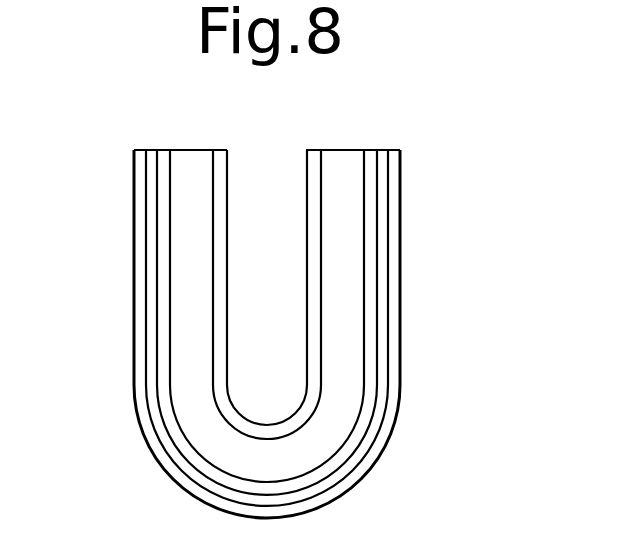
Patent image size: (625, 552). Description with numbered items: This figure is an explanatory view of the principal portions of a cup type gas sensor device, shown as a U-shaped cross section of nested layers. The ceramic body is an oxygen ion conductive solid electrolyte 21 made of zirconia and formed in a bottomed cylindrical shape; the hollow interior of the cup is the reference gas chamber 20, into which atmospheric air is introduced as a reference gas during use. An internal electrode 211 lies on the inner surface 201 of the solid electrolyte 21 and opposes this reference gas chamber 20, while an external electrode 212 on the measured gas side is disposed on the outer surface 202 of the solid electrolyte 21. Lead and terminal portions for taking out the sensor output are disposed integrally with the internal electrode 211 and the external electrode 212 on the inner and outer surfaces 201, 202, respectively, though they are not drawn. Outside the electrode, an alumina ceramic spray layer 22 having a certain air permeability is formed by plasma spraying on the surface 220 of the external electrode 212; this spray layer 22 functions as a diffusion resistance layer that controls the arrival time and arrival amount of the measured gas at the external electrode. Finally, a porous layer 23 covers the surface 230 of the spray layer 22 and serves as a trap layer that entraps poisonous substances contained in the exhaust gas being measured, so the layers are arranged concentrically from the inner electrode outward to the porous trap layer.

The U-shaped multi-layer tube 20 is at (276, 312).
The inner surface 201 is at (224, 330).
The outer surface 202 is at (175, 421).
The oxygen ion conductive solid electrolyte 21 is at (260, 294).
The internal electrode 211 is at (313, 183).
The external electrode 212 is at (368, 245).
The alumina ceramic spray layer 22 is at (277, 322).
The surface of the external electrode 220 is at (377, 295).
The porous layer 23 is at (317, 334).
The surface of the spray layer 230 is at (383, 422).